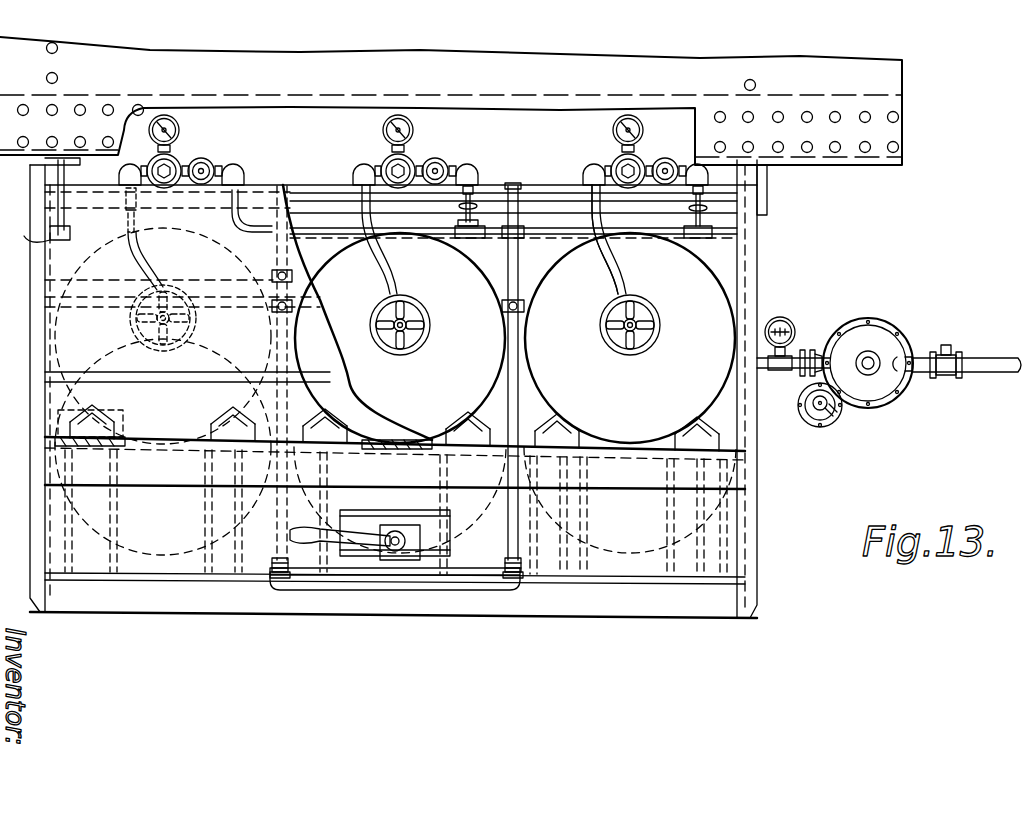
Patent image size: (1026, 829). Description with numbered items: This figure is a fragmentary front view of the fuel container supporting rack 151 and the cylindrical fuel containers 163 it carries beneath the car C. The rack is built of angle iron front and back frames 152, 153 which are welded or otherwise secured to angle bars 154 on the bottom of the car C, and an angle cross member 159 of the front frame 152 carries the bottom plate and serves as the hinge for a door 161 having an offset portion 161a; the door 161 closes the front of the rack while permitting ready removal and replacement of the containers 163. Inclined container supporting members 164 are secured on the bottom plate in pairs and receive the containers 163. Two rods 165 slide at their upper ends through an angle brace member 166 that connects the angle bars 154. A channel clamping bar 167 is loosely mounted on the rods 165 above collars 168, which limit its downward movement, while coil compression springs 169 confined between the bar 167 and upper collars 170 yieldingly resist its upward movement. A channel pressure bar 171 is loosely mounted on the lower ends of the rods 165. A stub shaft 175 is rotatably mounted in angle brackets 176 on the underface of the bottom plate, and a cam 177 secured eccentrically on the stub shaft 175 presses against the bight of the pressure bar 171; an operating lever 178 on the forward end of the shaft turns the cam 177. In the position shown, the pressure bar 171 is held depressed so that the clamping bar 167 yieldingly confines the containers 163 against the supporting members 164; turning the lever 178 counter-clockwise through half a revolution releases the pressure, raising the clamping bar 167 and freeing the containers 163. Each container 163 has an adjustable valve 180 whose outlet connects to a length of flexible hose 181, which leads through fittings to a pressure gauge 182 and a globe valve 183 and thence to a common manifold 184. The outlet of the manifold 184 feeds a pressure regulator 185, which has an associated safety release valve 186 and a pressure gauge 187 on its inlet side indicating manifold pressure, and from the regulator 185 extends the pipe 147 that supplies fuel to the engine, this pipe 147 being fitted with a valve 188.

The car c is at (404, 62).
The pipe 147 is at (1004, 358).
The fuel container supporting rack 151 is at (770, 240).
The front frame 152 is at (47, 484).
The back frame 153 is at (40, 612).
The angle bars 154 is at (768, 186).
The angle cross member 159 is at (122, 436).
The door 161 is at (50, 403).
The offset portion 161a is at (66, 298).
The cylindrical fuel containers 163 is at (98, 258).
The container supporting members 164 is at (212, 517).
The rods 165 is at (516, 184).
The angle brace member 166 is at (544, 196).
The channel clamping bar 167 is at (478, 240).
The collars 168 is at (292, 320).
The coil compression springs 169 is at (268, 278).
The upper collars 170 is at (276, 274).
The channel pressure bar 171 is at (422, 598).
The stub shaft 175 is at (400, 532).
The angle brackets 176 is at (372, 522).
The cam 177 is at (392, 560).
The operating lever 178 is at (338, 555).
The adjustable valves 180 is at (612, 352).
The lengths of flexible hose 181 is at (612, 274).
The pressure gauges 182 is at (620, 131).
The globe valves 183 is at (680, 160).
The manifold 184 is at (522, 240).
The pressure regulator 185 is at (870, 335).
The safety release valve 186 is at (822, 430).
The pressure gauge 187 is at (788, 320).
The valve 188 is at (942, 378).